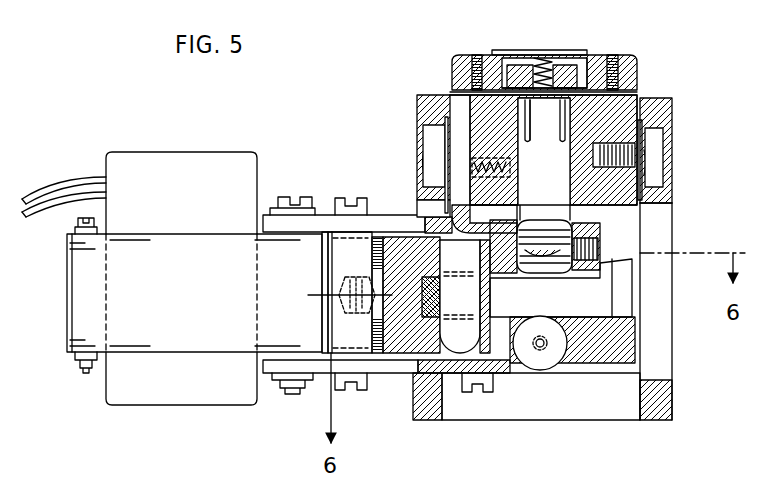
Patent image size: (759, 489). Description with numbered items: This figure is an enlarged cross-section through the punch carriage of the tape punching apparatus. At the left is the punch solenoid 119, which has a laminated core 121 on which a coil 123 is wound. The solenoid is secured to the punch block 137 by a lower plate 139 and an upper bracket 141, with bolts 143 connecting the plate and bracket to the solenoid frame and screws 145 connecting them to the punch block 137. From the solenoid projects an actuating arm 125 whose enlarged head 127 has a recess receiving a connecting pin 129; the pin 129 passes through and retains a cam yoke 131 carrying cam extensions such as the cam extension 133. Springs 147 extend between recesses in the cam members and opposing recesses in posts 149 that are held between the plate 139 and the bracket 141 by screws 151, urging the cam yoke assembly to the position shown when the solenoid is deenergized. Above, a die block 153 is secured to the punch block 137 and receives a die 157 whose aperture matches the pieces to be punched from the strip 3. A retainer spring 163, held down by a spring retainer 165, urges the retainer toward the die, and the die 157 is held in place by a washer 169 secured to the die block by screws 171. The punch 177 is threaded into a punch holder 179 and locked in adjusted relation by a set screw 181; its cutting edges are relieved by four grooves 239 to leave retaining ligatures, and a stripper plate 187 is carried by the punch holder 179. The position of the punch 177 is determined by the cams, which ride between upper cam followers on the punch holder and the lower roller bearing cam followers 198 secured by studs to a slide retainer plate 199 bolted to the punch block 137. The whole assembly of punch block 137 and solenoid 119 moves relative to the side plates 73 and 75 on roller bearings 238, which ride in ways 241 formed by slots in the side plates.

The strip 3 is at (536, 100).
The side plate 73 is at (417, 112).
The side plate 75 is at (672, 100).
The punch solenoid 119 is at (92, 383).
The laminated core 121 is at (68, 296).
The coil 123 is at (182, 149).
The actuating arm 125 is at (404, 226).
The enlarged head 127 is at (425, 333).
The connecting pin 129 is at (473, 304).
The cam yoke 131 is at (491, 298).
The cam extension 133 is at (623, 306).
The punch block 137 is at (671, 110).
The lower plate 139 is at (366, 371).
The upper bracket 141 is at (326, 222).
The bolt 143 is at (300, 197).
The screw 145 is at (470, 392).
The spring 147 is at (372, 324).
The post 149 is at (366, 266).
The screw 151 is at (337, 199).
The die block 153 is at (462, 55).
The die 157 is at (595, 62).
The retainer spring 163 is at (530, 56).
The spring retainer 165 is at (562, 55).
The washer 169 is at (610, 113).
The screw 171 is at (478, 55).
The punch 177 is at (560, 202).
The punch holder 179 is at (576, 222).
The set screw 181 is at (596, 246).
The stripper plate 187 is at (520, 138).
The roller bearing cam follower 198 is at (541, 274).
The slide retainer plate 199 is at (620, 358).
The roller bearing 238 is at (432, 142).
The groove 239 is at (597, 164).
The way 241 is at (428, 165).